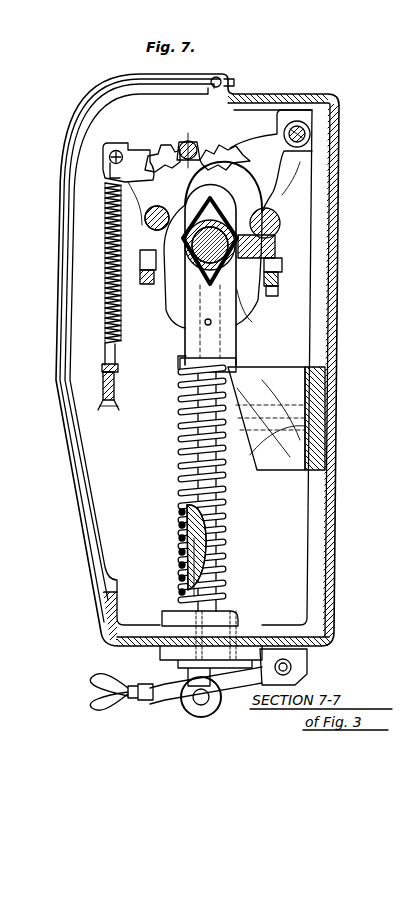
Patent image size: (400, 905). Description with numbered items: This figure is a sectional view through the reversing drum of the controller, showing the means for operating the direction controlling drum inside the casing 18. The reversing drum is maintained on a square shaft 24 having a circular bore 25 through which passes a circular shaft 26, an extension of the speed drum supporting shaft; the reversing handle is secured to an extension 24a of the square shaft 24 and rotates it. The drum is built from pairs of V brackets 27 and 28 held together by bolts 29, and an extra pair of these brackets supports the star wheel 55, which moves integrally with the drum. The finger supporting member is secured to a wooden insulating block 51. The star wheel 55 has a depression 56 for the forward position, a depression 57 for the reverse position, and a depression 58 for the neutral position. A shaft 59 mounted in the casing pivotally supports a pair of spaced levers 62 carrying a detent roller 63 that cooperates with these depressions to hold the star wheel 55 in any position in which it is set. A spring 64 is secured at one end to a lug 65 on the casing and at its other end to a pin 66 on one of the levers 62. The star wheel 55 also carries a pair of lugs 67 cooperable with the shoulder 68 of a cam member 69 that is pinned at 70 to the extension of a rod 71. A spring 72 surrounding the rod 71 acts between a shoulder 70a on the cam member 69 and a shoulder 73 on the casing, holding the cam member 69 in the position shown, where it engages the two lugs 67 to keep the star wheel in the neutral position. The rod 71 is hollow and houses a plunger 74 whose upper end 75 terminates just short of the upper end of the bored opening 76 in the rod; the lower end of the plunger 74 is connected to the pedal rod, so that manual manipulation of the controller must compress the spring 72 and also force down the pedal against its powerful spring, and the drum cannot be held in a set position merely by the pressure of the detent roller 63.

The casing 18 is at (98, 564).
The square shaft 24 is at (274, 220).
The extension of the square shaft 24a is at (277, 245).
The circular bore 25 is at (284, 263).
The circular shaft 26 is at (280, 277).
The V bracket 27 is at (186, 176).
The V bracket 28 is at (197, 290).
The bolts 29 is at (152, 295).
The wooden insulating block 51 is at (336, 432).
The star wheel 55 is at (279, 188).
The depression 56 is at (244, 146).
The depression 57 is at (104, 199).
The depression 58 is at (187, 142).
The shaft 59 is at (313, 141).
The levers 62 is at (287, 126).
The detent roller 63 is at (192, 133).
The spring 64 is at (104, 345).
The lug 65 is at (101, 407).
The pin 66 is at (110, 157).
The lugs 67 is at (145, 235).
The shoulder 68 is at (118, 252).
The cam member 69 is at (246, 318).
The pin 70 is at (211, 325).
The shoulder 70a is at (180, 372).
The rod 71 is at (186, 334).
The spring 72 is at (227, 507).
The shoulder 73 is at (234, 614).
The plunger 74 is at (180, 566).
The upper end of the plunger 75 is at (190, 546).
The bored opening 76 is at (188, 534).